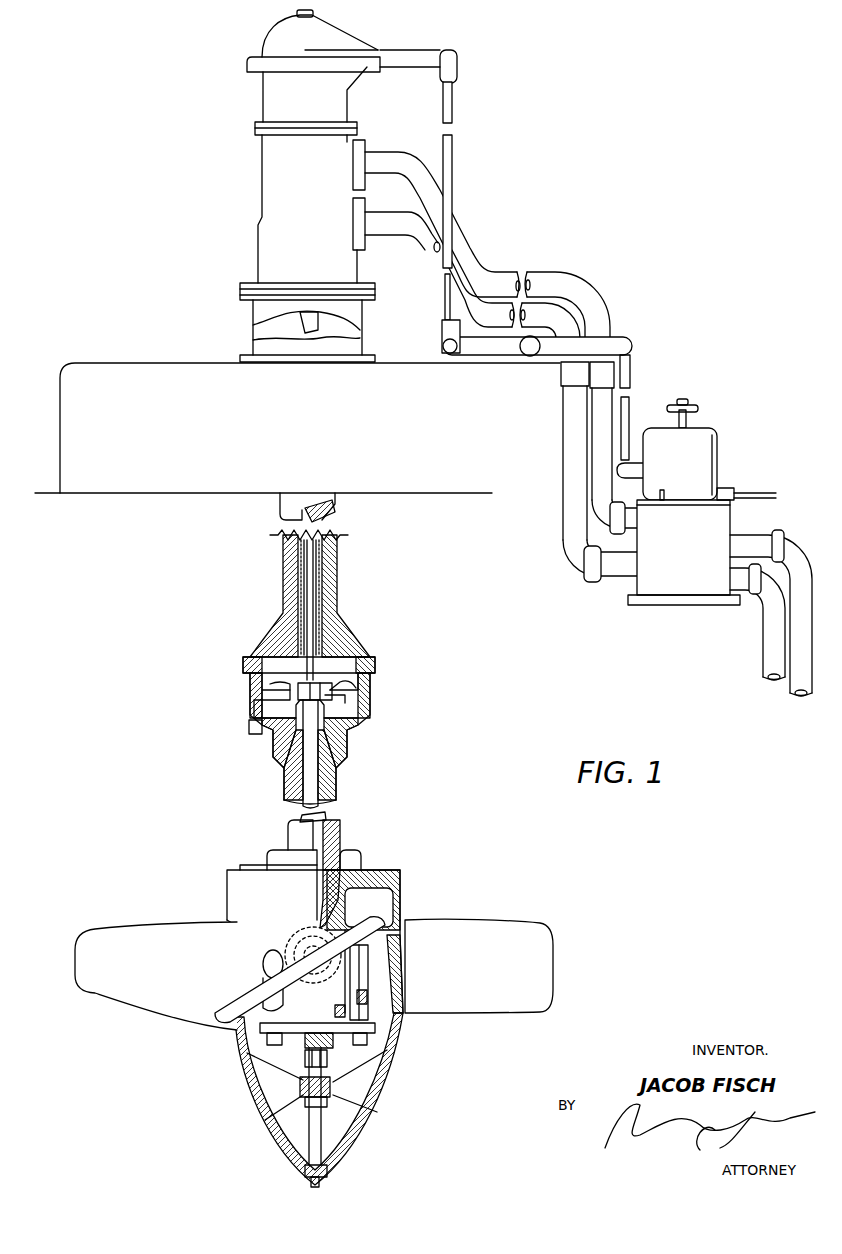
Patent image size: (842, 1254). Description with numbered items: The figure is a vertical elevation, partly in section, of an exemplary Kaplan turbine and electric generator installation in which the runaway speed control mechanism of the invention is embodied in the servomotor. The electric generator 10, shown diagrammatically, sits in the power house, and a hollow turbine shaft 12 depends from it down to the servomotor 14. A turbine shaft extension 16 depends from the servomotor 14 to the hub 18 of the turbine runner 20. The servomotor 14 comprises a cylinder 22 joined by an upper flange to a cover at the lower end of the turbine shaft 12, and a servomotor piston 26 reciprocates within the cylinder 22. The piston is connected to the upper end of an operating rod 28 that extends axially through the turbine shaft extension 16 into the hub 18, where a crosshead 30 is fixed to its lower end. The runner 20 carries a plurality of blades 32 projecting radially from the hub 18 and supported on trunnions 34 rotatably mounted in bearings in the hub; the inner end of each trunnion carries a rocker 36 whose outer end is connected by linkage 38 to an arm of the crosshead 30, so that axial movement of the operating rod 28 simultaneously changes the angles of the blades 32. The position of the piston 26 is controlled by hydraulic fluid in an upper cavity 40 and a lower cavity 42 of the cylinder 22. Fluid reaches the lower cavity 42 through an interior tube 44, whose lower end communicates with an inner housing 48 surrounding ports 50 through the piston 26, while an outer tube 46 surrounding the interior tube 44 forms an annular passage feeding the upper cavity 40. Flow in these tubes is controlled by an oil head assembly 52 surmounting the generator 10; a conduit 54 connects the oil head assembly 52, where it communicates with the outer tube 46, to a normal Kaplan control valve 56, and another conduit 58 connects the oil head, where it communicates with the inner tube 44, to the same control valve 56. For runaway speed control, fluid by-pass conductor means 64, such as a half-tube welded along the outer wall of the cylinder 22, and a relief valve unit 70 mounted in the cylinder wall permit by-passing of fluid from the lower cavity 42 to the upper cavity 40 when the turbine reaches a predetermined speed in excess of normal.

The electric generator 10 is at (150, 468).
The hollow turbine shaft 12 is at (335, 578).
The servomotor 14 is at (380, 707).
The turbine shaft extension 16 is at (338, 788).
The hub 18 is at (403, 888).
The turbine runner 20 is at (215, 903).
The cylinder 22 is at (357, 722).
The servomotor piston 26 is at (343, 690).
The operating rod 28 is at (313, 818).
The crosshead 30 is at (333, 1048).
The blades 32 is at (485, 937).
The trunnions 34 is at (375, 955).
The rocker 36 is at (260, 957).
The linkage 38 is at (260, 983).
The upper cavity 40 is at (340, 680).
The lower cavity 42 is at (342, 712).
The interior tube 44 is at (310, 593).
The outer tube 46 is at (300, 573).
The inner housing 48 is at (290, 685).
The ports 50 is at (290, 745).
The oil head assembly 52 is at (278, 92).
The conduit 54 is at (437, 253).
The Kaplan control valve 56 is at (702, 450).
The conduit 58 is at (462, 230).
The fluid by-pass conductor means 64 is at (257, 700).
The relief valve unit 70 is at (248, 734).